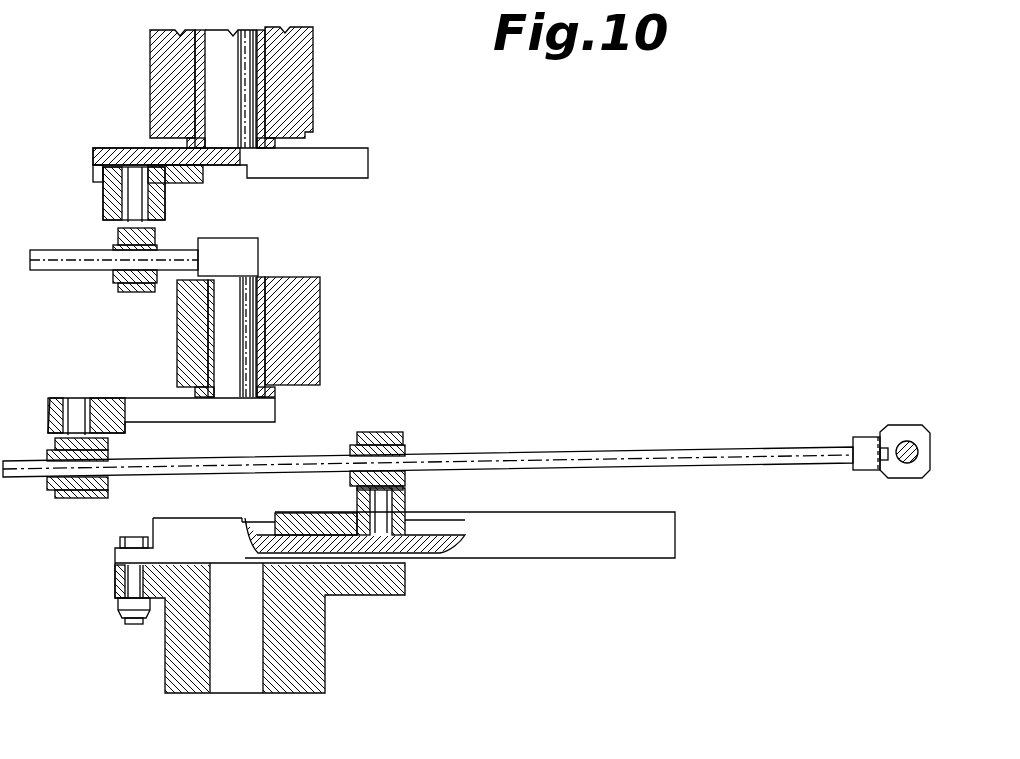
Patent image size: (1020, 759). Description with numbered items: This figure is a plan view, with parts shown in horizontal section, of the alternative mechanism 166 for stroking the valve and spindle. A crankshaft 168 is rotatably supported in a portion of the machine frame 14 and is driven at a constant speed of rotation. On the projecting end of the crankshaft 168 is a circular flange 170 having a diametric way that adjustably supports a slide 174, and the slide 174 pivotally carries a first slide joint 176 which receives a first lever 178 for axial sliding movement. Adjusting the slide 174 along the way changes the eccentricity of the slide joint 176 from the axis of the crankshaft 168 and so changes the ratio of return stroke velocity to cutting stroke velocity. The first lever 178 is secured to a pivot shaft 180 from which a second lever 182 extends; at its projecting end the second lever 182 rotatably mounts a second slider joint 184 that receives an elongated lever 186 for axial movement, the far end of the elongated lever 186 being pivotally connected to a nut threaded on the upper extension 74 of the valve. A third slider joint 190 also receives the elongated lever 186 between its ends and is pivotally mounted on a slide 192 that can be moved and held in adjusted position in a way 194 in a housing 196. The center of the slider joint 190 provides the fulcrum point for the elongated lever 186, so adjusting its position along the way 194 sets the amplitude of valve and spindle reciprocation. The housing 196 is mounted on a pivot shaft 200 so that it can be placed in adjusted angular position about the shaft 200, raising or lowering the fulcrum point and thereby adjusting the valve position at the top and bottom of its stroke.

The machine frame 14 is at (302, 88).
The upper extension of the valve 74 is at (907, 445).
The alternative mechanism 166 is at (322, 265).
The crankshaft 168 is at (220, 65).
The circular flange 170 is at (352, 154).
The slide 174 is at (202, 184).
The first slide joint 176 is at (135, 292).
The first lever 178 is at (82, 212).
The pivot shaft 180 is at (232, 325).
The second lever 182 is at (260, 407).
The second slider joint 184 is at (62, 497).
The elongated lever 186 is at (563, 455).
The third slider joint 190 is at (384, 432).
The slide 192 is at (404, 505).
The way 194 is at (452, 527).
The housing 196 is at (583, 541).
The pivot shaft 200 is at (235, 653).